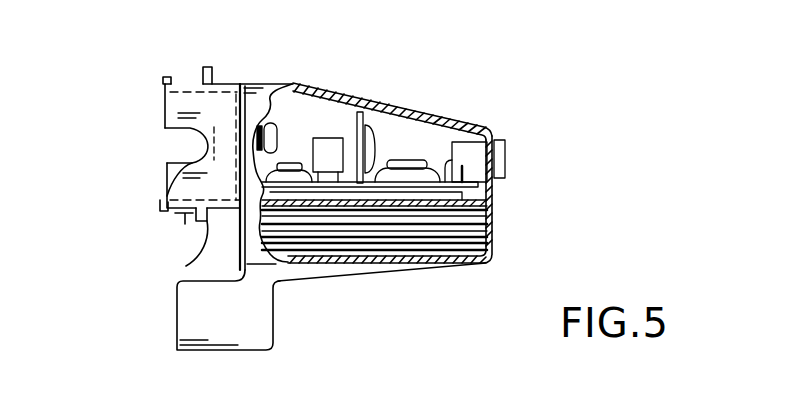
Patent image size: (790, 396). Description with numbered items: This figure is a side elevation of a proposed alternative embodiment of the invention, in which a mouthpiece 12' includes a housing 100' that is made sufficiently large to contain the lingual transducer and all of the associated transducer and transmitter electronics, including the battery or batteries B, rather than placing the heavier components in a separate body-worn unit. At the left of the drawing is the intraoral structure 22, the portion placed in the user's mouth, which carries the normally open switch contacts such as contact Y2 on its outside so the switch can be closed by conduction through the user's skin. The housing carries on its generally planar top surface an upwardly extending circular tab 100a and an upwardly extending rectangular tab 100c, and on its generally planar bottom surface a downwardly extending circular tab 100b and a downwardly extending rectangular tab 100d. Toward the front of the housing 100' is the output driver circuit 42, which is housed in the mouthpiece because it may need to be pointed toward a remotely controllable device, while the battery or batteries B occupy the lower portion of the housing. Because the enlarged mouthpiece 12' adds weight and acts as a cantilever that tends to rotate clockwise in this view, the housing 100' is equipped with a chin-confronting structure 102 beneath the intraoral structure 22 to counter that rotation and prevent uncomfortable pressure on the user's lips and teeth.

The mouthpiece 12' is at (366, 160).
The housing 100' is at (370, 153).
The intraoral structure 22 is at (180, 78).
The circular tab 100a is at (213, 77).
The circular tab 100b is at (186, 262).
The rectangular tab 100c is at (162, 80).
The rectangular tab 100d is at (160, 212).
The output driver circuit 42 is at (506, 150).
The battery B is at (478, 228).
The electrical contact Y2 is at (198, 215).
The chin-confronting structure 102 is at (176, 316).